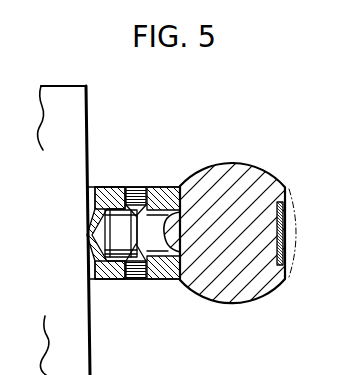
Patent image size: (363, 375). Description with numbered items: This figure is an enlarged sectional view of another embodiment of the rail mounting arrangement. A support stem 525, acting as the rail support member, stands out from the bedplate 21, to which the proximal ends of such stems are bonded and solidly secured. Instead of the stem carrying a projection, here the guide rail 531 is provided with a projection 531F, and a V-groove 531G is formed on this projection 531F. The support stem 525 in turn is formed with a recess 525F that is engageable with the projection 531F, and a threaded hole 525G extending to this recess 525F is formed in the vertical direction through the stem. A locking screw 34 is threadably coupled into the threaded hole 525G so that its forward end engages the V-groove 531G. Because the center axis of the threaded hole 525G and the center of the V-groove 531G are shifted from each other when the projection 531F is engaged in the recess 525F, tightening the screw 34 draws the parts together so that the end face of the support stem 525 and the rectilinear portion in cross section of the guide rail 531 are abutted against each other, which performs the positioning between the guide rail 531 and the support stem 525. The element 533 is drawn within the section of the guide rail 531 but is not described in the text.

The bedplate 21 is at (77, 104).
The locking screw 34 is at (138, 186).
The support stem 525 is at (99, 186).
The recess 525F is at (126, 187).
The threaded hole 525G is at (147, 187).
The guide rail 531 is at (273, 190).
The projection 531F is at (180, 190).
The V-groove 531G is at (158, 282).
The insert pad 533 is at (288, 221).